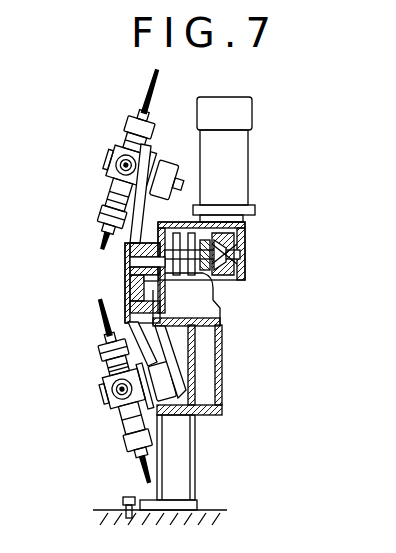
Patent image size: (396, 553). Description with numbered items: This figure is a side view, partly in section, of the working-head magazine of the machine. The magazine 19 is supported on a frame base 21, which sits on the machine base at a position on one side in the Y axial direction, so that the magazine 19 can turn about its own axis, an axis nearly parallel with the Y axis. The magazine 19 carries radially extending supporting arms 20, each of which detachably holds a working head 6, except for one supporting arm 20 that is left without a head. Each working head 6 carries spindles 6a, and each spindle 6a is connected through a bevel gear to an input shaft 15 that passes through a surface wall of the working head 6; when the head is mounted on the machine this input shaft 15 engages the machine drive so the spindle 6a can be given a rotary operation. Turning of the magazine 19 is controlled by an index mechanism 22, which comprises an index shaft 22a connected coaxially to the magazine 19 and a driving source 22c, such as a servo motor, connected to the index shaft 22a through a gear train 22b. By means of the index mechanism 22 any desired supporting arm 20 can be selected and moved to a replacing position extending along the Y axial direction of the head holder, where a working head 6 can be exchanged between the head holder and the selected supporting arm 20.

The working head 6 is at (110, 430).
The spindle 6a is at (159, 83).
The input shaft 15 is at (107, 165).
The magazine 19 is at (235, 346).
The supporting arm 20 is at (120, 204).
The frame base 21 is at (222, 408).
The index mechanism 22 is at (252, 255).
The index shaft 22a is at (126, 283).
The gear train 22b is at (243, 282).
The driving source 22c is at (245, 165).